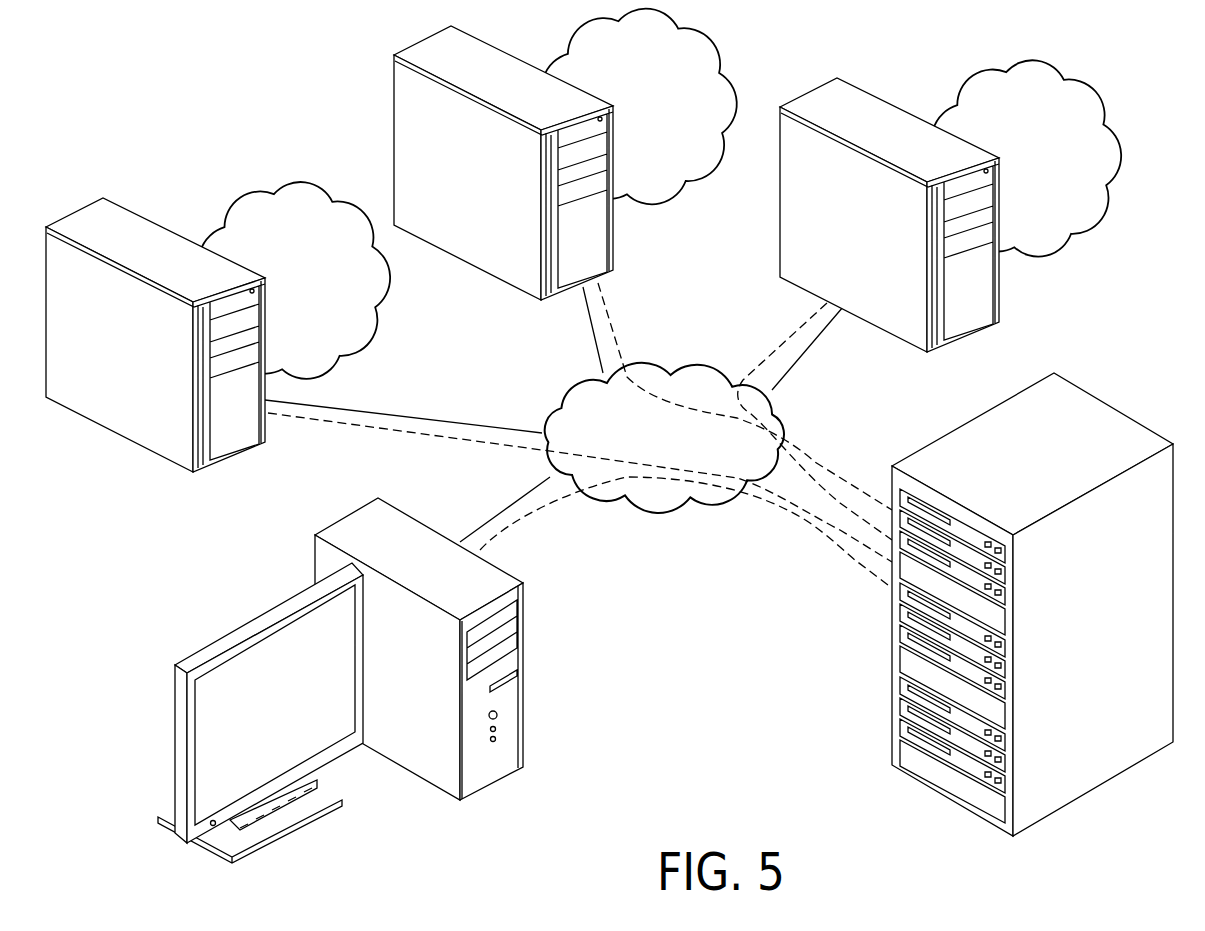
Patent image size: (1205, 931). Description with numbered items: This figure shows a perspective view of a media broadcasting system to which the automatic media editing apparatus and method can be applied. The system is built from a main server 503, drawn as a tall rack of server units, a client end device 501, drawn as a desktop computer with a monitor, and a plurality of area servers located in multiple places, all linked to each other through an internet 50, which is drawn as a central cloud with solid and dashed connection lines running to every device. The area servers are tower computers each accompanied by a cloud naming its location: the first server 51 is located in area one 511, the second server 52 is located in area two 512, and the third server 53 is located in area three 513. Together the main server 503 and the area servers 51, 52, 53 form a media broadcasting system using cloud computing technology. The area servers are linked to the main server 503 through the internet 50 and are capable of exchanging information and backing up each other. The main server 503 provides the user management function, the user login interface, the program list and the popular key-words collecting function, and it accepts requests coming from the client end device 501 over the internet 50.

The internet 50 is at (557, 392).
The client end device 501 is at (512, 692).
The main server 503 is at (1129, 433).
The first server 51 is at (975, 290).
The area one 511 is at (1117, 153).
The area two 512 is at (680, 195).
The area three 513 is at (248, 186).
The second server 52 is at (437, 158).
The third server 53 is at (147, 233).